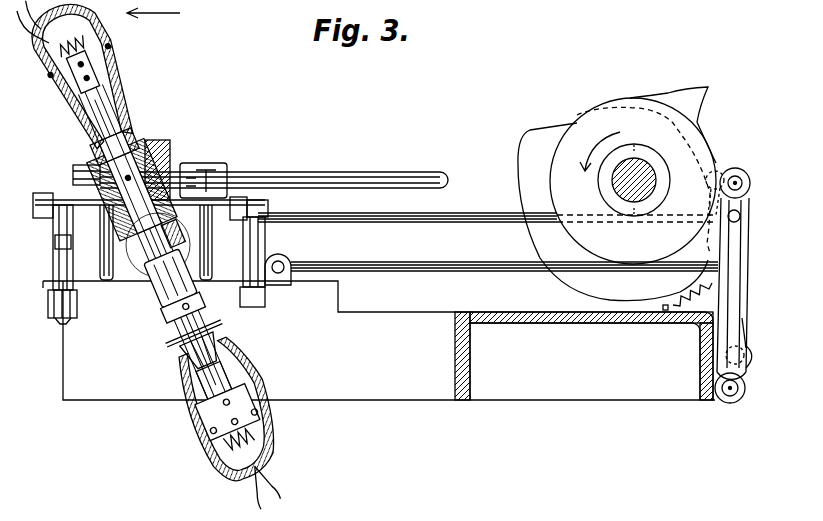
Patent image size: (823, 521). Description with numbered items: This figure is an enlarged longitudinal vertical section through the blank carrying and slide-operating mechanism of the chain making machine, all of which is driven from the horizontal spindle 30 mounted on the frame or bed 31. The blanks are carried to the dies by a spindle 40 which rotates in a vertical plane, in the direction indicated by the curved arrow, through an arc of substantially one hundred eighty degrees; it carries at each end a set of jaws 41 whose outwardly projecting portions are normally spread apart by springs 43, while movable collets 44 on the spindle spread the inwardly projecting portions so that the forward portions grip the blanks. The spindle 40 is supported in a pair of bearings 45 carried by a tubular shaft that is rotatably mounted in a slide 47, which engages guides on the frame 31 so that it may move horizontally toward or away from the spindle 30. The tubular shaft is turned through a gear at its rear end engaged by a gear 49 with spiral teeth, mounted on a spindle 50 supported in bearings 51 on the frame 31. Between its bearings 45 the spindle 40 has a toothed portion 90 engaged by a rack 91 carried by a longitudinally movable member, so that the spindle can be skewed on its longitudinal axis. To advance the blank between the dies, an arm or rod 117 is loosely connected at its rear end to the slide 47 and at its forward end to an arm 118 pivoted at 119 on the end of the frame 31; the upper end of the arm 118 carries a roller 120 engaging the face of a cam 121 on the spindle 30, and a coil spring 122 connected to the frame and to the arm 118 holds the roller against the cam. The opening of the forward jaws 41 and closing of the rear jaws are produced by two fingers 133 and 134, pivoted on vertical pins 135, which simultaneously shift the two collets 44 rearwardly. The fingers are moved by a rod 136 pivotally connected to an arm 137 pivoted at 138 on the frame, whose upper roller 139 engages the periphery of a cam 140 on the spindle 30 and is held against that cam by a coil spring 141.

The horizontal spindle 30 is at (613, 184).
The frame or bed 31 is at (435, 390).
The spindle 40 is at (110, 115).
The jaws 41 is at (100, 39).
The springs 43 is at (62, 22).
The movable collets 44 is at (134, 140).
The bearings 45 is at (130, 233).
The slide 47 is at (285, 285).
The gear 49 is at (162, 140).
The spindle 50 is at (292, 173).
The bearings 51 is at (97, 162).
The toothed portion 90 is at (174, 245).
The rack 91 is at (176, 232).
The arm or rod 117 is at (408, 262).
The arm 118 is at (746, 330).
The pivot 119 is at (756, 358).
The roller 120 is at (725, 172).
The cam 121 is at (545, 128).
The coil spring 122 is at (683, 308).
The finger 133 is at (265, 235).
The finger 134 is at (42, 235).
The vertical pins 135 is at (70, 320).
The rod 136 is at (448, 213).
The arm 137 is at (750, 252).
The pivot 138 is at (740, 395).
The roller 139 is at (752, 180).
The cam 140 is at (640, 100).
The coil spring 141 is at (700, 327).